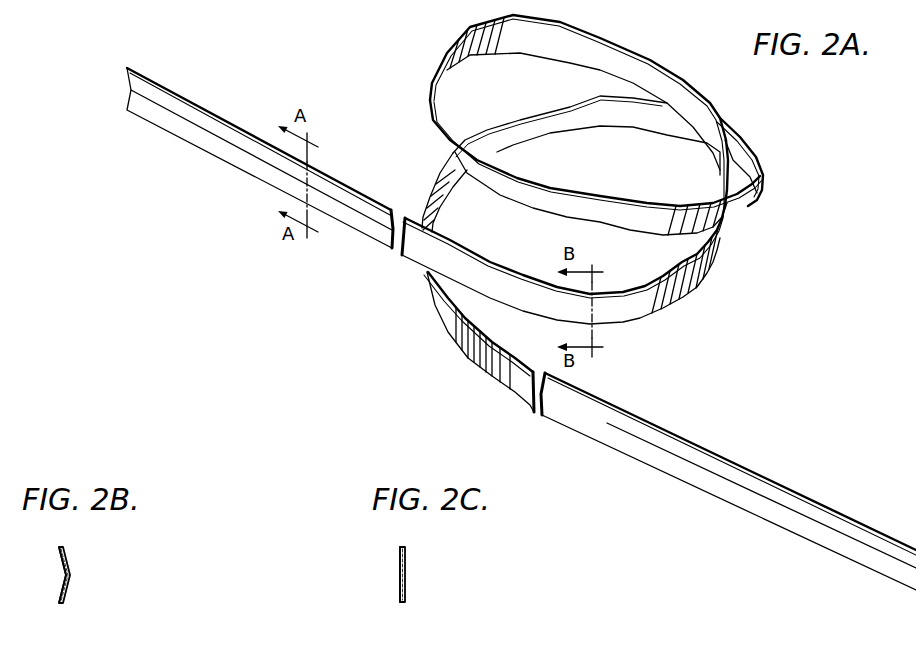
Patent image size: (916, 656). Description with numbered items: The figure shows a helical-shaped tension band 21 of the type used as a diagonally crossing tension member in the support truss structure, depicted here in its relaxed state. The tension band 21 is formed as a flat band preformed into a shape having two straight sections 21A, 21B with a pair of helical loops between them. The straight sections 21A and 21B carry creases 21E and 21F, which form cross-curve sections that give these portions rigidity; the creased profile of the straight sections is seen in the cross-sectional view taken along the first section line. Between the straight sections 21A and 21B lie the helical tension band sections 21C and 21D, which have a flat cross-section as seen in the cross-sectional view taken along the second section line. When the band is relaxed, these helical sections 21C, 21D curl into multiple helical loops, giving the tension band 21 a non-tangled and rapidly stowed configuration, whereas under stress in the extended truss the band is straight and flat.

In FIG. 2A, the tension band 21 is at (464, 365).
In FIG. 2A, the straight section 21A is at (200, 105).
In FIG. 2A, the straight section 21B is at (713, 448).
In FIG. 2A, the helical tension band section 21C is at (715, 262).
In FIG. 2C, the helical tension band section 21C is at (405, 578).
In FIG. 2A, the helical tension band section 21D is at (758, 142).
In FIG. 2A, the crease 21E is at (168, 108).
In FIG. 2B, the crease 21E is at (69, 575).
In FIG. 2A, the crease 21F is at (843, 532).
In FIG. 2B, the crease 21F is at (62, 575).